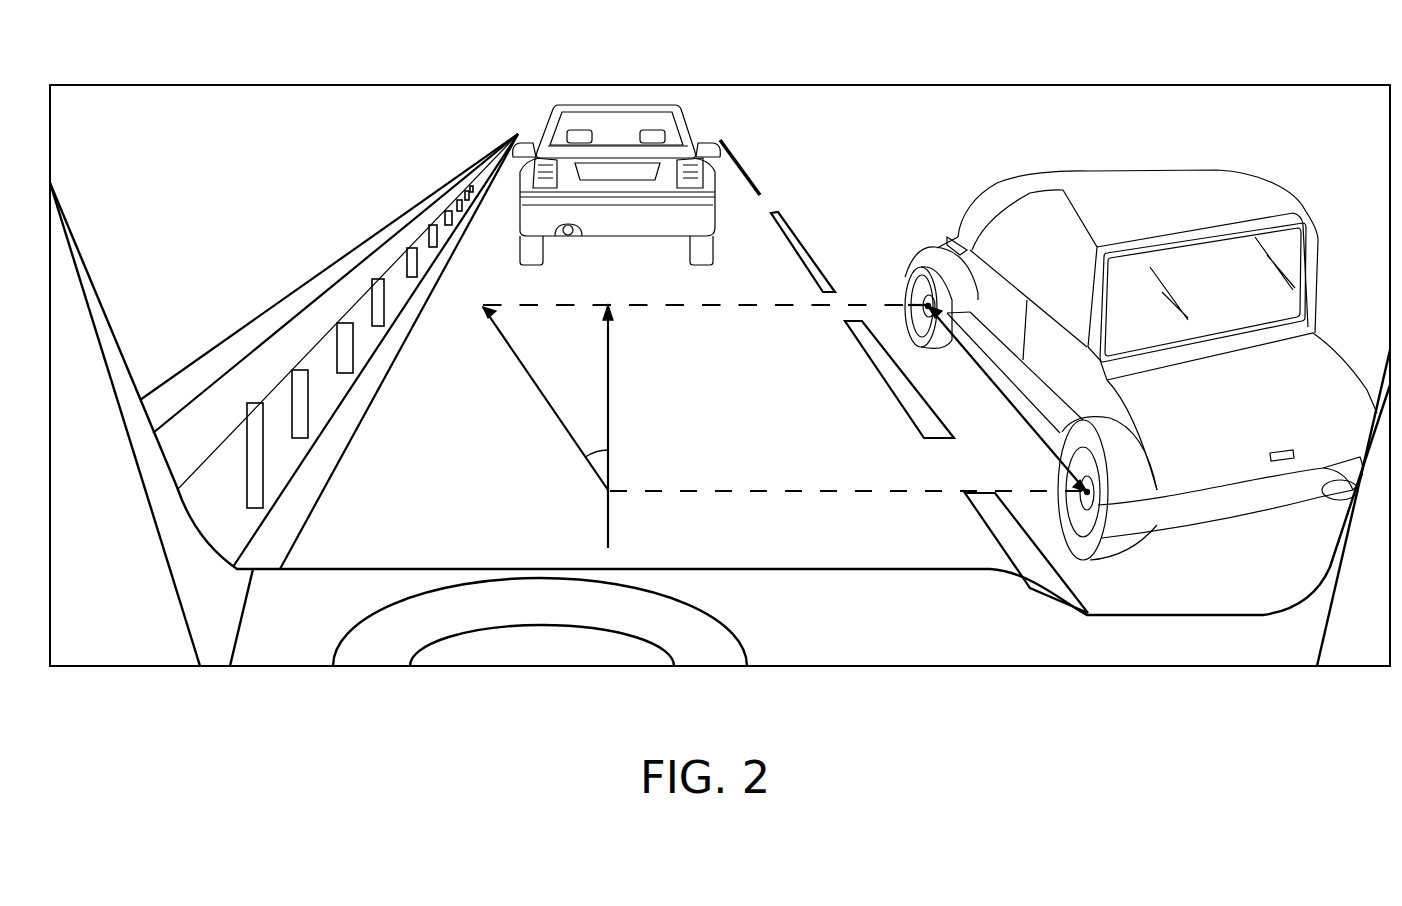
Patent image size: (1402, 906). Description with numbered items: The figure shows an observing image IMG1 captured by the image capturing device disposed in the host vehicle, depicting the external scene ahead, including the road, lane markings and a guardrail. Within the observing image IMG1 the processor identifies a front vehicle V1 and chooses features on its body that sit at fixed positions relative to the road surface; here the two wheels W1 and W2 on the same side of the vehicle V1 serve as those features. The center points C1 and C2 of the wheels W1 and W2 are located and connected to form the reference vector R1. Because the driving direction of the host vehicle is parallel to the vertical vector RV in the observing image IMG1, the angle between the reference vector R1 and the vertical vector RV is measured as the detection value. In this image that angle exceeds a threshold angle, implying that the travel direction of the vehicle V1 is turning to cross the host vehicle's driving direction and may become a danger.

The observing image IMG1 is at (720, 349).
The front vehicle V1 is at (1113, 379).
The wheel W1 is at (1096, 545).
The wheel W2 is at (918, 288).
The center point C1 is at (1085, 500).
The center point C2 is at (928, 306).
The reference vector R1 is at (570, 433).
The vertical vector RV is at (633, 426).